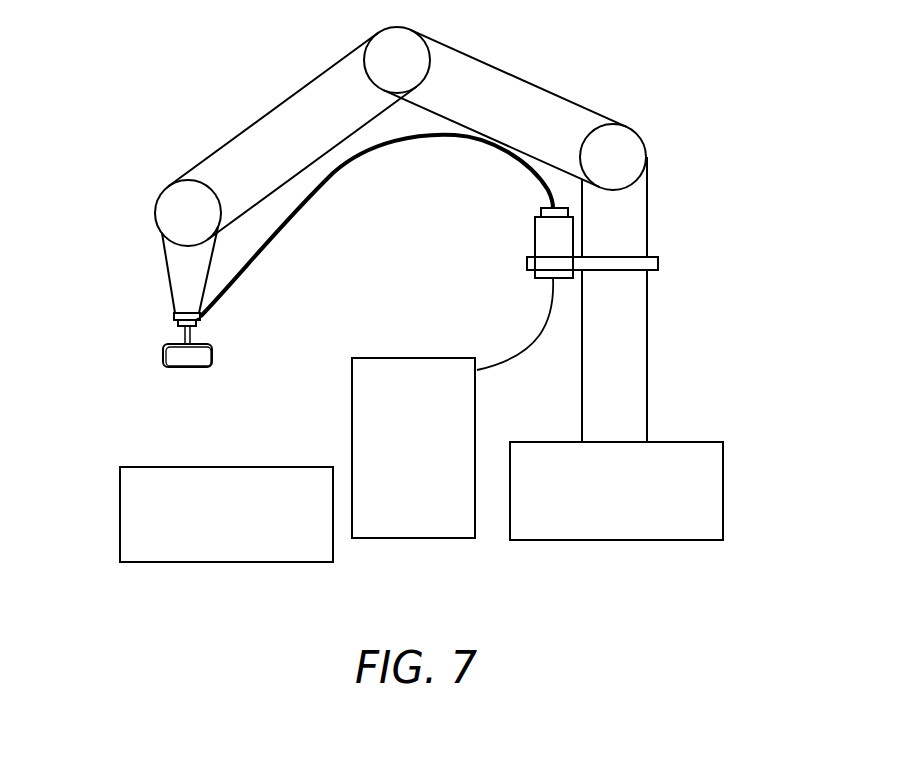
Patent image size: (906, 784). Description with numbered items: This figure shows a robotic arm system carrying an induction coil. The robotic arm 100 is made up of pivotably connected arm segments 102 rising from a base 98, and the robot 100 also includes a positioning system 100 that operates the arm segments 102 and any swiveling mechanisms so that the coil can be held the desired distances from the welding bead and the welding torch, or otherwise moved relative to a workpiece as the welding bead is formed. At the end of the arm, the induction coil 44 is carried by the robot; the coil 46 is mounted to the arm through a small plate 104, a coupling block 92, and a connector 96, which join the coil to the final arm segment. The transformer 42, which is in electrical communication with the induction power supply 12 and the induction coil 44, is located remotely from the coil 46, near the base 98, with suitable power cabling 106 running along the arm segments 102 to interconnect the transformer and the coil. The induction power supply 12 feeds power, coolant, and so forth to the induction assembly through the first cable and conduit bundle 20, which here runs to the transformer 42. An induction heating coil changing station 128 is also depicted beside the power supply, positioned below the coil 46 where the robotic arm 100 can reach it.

The robotic arm 100 is at (618, 541).
The arm segments 102 is at (278, 121).
The power cabling 106 is at (332, 178).
The base 98 is at (635, 369).
The transformer 42 is at (544, 243).
The first cable and conduit bundle 20 is at (537, 344).
The induction power supply 12 is at (418, 540).
The induction heating coil changing station 128 is at (235, 562).
The mounting plate 104 is at (176, 316).
The coupling block 92 is at (173, 327).
The cable connector 96 is at (203, 326).
The induction coil 44 is at (153, 365).
The coil 46 is at (200, 368).